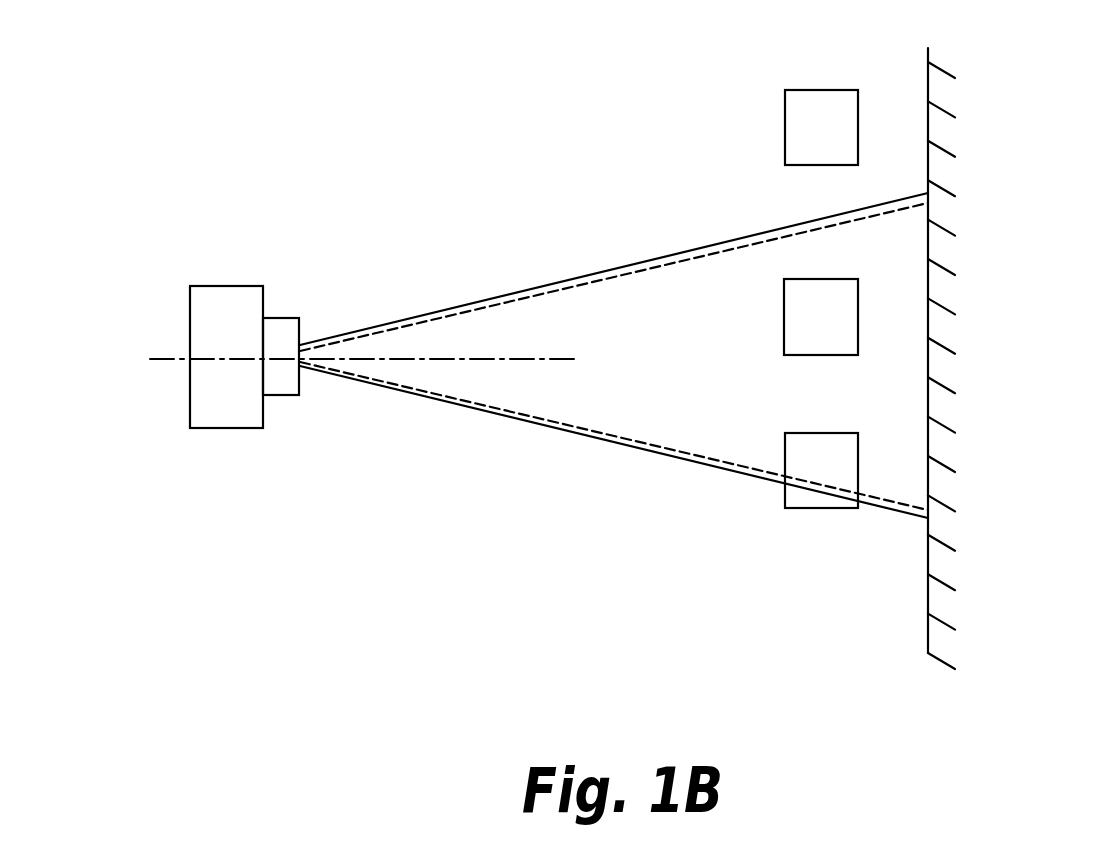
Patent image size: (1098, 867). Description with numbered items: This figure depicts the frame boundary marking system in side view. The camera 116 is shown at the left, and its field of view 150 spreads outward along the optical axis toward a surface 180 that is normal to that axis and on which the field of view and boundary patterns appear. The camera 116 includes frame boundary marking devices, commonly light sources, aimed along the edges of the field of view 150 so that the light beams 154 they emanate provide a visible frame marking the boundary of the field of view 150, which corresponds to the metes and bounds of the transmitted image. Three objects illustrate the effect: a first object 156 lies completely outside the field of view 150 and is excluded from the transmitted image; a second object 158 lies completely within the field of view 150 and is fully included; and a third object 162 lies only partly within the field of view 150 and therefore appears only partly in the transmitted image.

The camera 116 is at (228, 428).
The field of view 150 is at (425, 322).
The light beams 154 is at (567, 282).
The first object 156 is at (830, 90).
The second object 158 is at (832, 355).
The third object 162 is at (810, 508).
The surface 180 is at (928, 318).